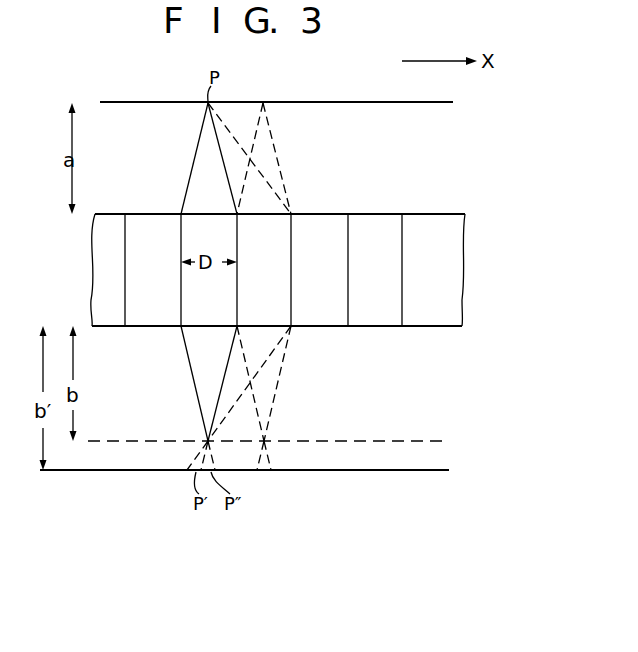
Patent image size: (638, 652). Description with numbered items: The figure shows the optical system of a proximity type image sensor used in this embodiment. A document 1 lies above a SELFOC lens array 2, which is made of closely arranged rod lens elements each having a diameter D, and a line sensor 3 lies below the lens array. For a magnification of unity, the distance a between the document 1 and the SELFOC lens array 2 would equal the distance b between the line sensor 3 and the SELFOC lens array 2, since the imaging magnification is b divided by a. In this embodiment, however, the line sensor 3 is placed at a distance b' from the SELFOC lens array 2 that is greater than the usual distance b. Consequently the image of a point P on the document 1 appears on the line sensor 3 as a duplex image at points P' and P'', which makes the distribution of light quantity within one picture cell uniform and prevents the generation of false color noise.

The document 1 is at (453, 102).
The SELFOC lens array 2 is at (465, 214).
The line sensor 3 is at (443, 441).